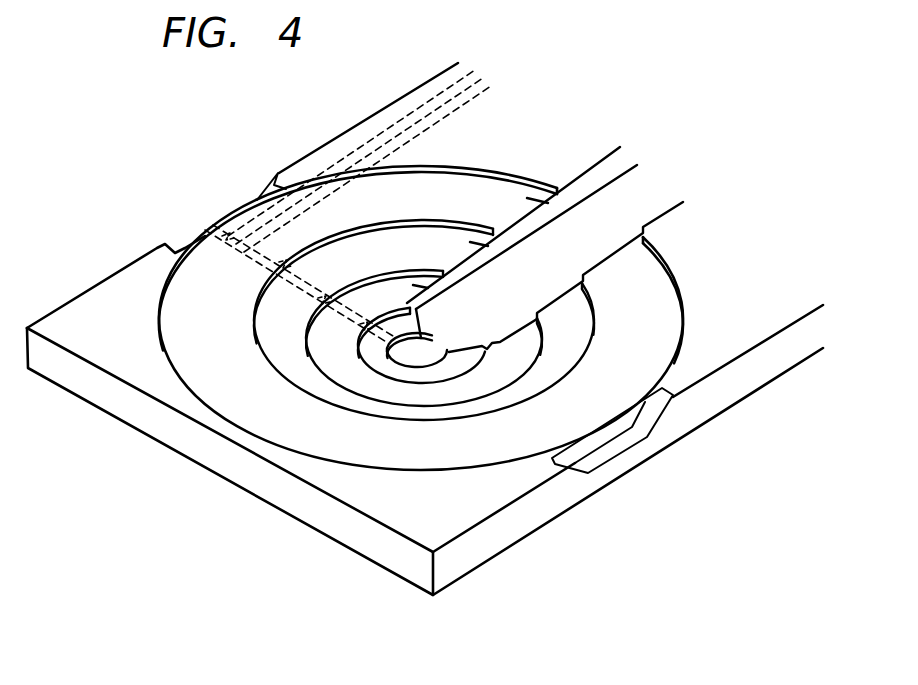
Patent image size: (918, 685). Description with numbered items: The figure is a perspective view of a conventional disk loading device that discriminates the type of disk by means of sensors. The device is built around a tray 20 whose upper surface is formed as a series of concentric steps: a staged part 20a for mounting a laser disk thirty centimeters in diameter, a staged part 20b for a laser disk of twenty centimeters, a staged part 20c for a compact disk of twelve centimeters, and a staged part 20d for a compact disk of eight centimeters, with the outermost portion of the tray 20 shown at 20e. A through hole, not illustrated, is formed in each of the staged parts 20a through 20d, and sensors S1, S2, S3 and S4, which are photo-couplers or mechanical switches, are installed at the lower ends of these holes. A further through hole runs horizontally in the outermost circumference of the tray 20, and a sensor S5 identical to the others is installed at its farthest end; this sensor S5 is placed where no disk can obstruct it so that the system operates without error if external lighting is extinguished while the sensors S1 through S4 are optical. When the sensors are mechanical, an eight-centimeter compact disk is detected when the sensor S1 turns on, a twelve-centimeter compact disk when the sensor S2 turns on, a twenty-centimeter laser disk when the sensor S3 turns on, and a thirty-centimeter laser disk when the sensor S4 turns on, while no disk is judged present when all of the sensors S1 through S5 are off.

The tray 20 is at (87, 390).
The staged part 20a is at (566, 209).
The staged part 20b is at (498, 254).
The staged part 20c is at (446, 293).
The staged part 20d is at (403, 372).
The outer step of stepped recess 20e is at (187, 247).
The sensor S1 is at (368, 340).
The sensor S2 is at (323, 302).
The sensor S3 is at (297, 273).
The sensor S4 is at (235, 238).
The sensor S5 is at (276, 172).